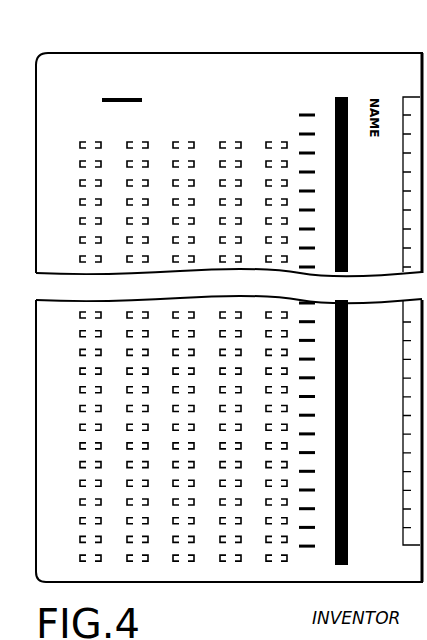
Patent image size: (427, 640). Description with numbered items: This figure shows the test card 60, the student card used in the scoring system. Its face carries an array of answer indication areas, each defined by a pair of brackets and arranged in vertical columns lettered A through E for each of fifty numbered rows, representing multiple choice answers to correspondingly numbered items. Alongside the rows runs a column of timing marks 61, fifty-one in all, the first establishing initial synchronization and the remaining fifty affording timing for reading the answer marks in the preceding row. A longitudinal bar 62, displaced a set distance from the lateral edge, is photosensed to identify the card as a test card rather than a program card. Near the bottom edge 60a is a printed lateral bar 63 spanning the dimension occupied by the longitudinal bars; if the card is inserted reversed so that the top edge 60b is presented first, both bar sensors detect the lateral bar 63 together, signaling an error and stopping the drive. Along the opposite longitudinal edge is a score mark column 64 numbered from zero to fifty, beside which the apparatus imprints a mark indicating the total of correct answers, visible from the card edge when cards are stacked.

The test card 60 is at (276, 54).
The bottom edge 60a is at (218, 53).
The top edge 60b is at (198, 582).
The timing marks 61 is at (307, 114).
The longitudinal bar 62 is at (341, 97).
The lateral bar 63 is at (105, 98).
The score mark column 64 is at (407, 97).